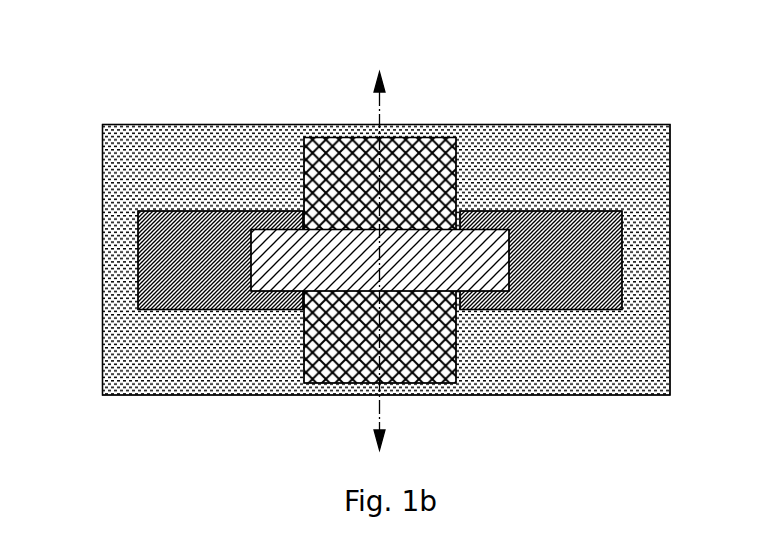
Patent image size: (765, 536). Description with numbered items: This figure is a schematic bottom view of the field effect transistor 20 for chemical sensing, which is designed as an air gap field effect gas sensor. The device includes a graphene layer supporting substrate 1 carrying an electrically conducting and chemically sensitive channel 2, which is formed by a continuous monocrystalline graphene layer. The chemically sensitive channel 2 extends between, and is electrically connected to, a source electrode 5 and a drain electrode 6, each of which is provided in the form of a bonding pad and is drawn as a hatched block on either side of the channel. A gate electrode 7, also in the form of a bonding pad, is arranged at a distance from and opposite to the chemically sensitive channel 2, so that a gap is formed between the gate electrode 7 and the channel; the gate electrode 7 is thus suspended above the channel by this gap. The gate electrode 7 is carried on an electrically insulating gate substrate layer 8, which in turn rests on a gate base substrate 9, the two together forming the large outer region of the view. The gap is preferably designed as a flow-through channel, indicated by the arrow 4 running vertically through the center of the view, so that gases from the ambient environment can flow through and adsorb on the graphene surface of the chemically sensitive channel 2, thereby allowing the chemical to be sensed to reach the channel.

The field effect transistor 20 is at (105, 57).
The graphene layer supporting substrate 1 is at (316, 228).
The chemically sensitive channel 2 is at (375, 173).
The arrow 4 is at (378, 118).
The source electrode 5 is at (137, 255).
The drain electrode 6 is at (560, 212).
The gate electrode 7 is at (447, 138).
The electrically insulating gate substrate layer 8 is at (133, 125).
The gate base substrate 9 is at (387, 235).